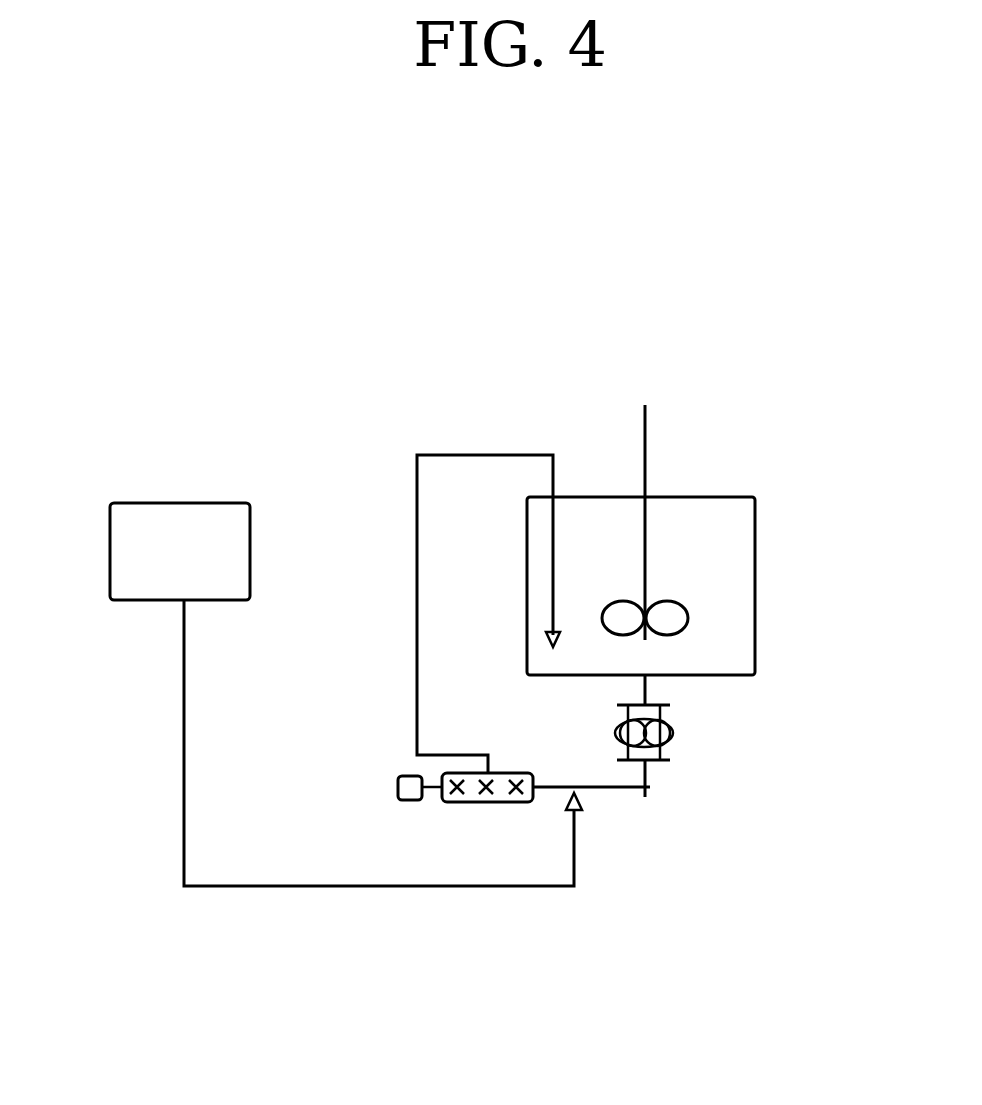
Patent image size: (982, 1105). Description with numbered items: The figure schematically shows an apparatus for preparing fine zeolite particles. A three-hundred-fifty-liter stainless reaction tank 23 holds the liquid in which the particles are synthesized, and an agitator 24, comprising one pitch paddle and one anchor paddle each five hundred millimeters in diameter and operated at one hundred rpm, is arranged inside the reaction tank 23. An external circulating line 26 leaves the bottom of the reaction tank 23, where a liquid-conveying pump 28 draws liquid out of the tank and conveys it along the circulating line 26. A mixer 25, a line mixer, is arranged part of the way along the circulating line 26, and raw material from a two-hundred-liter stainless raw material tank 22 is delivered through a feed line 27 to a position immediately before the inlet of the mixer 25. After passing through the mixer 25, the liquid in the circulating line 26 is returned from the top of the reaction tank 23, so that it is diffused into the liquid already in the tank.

The raw material tank 22 is at (205, 527).
The reaction tank 23 is at (728, 603).
The agitator 24 is at (645, 462).
The mixer 25 is at (473, 802).
The circulating line 26 is at (413, 672).
The feed line 27 is at (180, 710).
The liquid-conveying pump 28 is at (673, 730).